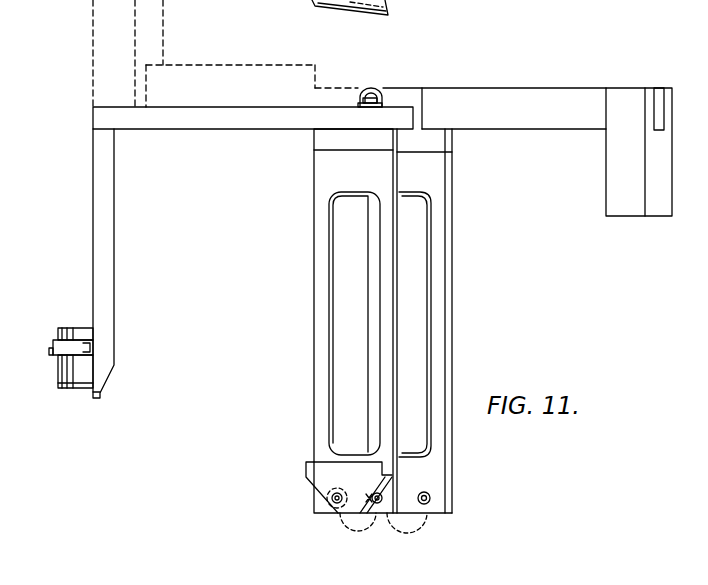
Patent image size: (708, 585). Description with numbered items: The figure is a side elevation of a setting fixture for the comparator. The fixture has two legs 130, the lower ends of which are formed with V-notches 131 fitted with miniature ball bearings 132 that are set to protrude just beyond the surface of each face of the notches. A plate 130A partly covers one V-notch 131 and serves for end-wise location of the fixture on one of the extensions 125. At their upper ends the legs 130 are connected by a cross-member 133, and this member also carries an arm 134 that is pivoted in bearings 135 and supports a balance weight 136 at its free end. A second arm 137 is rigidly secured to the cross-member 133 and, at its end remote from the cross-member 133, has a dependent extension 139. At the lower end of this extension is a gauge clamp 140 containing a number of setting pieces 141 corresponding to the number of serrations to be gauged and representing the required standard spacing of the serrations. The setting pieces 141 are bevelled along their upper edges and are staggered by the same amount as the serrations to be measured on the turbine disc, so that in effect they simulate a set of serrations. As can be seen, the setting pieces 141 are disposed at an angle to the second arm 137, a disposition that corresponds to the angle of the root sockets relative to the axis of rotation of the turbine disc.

The extension 125 is at (341, 520).
The leg 130 is at (440, 246).
The plate 130A is at (312, 470).
The V-notch 131 is at (348, 498).
The miniature ball bearing 132 is at (431, 499).
The cross-member 133 is at (447, 142).
The arm 134 is at (205, 78).
The bearing 135 is at (373, 93).
The balance weight 136 is at (625, 202).
The second arm 137 is at (230, 122).
The dependent extension 139 is at (107, 264).
The gauge clamp 140 is at (72, 343).
The setting piece 141 is at (88, 328).